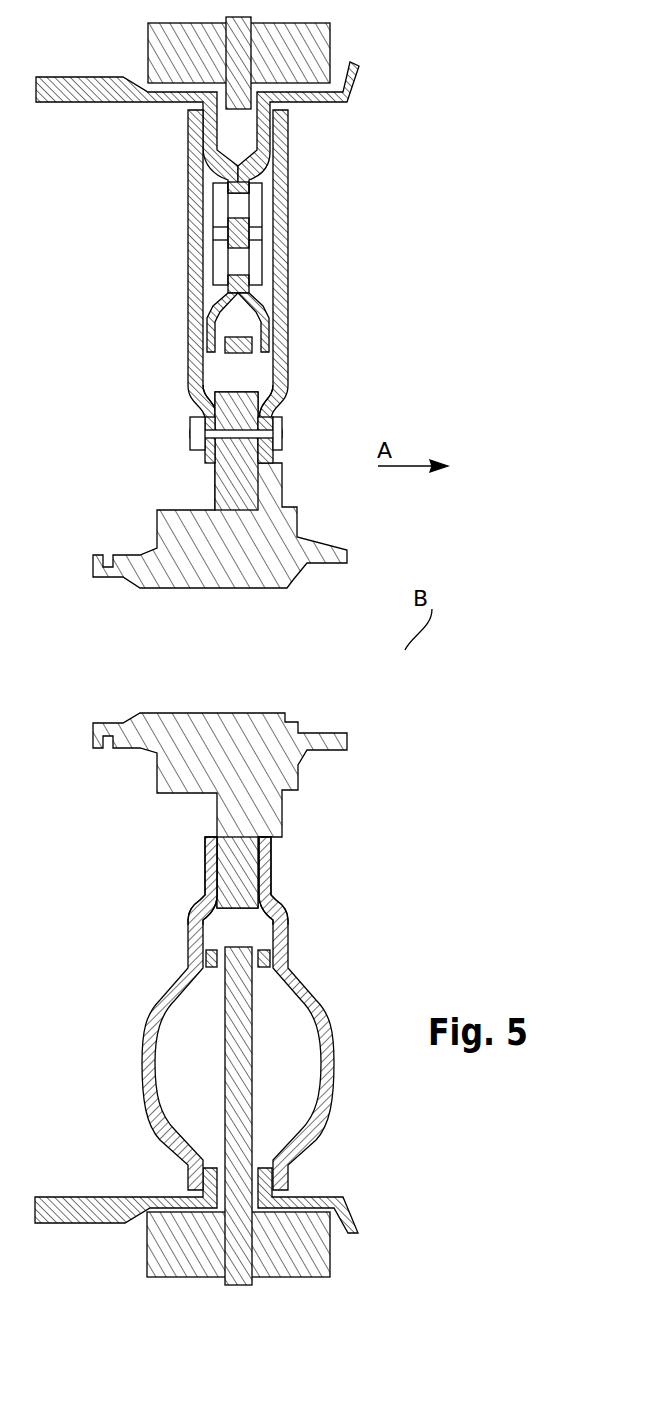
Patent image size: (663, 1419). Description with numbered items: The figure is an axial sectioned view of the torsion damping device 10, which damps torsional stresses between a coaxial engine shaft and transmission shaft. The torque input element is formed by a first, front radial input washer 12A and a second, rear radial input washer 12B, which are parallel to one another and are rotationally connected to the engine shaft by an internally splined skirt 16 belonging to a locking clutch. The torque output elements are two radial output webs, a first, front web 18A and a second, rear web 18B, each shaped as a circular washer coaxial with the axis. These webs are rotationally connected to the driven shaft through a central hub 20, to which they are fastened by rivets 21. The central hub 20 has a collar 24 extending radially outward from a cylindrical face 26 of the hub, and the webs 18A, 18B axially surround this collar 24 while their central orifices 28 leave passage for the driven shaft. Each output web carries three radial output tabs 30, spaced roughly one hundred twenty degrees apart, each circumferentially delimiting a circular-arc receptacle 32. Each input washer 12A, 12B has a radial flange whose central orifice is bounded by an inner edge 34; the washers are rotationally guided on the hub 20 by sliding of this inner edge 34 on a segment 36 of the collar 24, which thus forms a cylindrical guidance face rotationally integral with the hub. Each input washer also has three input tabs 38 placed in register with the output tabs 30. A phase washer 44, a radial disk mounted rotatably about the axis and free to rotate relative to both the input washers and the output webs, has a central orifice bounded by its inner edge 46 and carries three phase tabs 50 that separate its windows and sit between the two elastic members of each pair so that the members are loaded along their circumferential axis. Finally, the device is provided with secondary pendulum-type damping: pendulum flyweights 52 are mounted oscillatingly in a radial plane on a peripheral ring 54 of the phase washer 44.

The torsion damping device 10 is at (446, 174).
The first front radial input washer 12A is at (265, 335).
The second rear radial input washer 12B is at (210, 330).
The internally splined skirt 16 is at (85, 90).
The first front web 18A is at (285, 235).
The second rear web 18B is at (200, 228).
The central hub 20 is at (182, 525).
The rivets 21 is at (278, 438).
The collar 24 is at (235, 418).
The cylindrical face 26 is at (285, 855).
The central orifices 28 is at (215, 825).
The radial output tabs 30 is at (196, 165).
The receptacle 32 is at (178, 1025).
The inner edge 34 is at (215, 357).
The segment of collar / cylindrical guidance face 36 is at (243, 390).
The input tabs 38 is at (238, 248).
The phase washer 44 is at (248, 1075).
The inner edge of phase washer 46 is at (243, 940).
The phase tabs 50 is at (243, 1033).
The pendulum flyweights 52 is at (175, 50).
The peripheral ring 54 is at (230, 72).